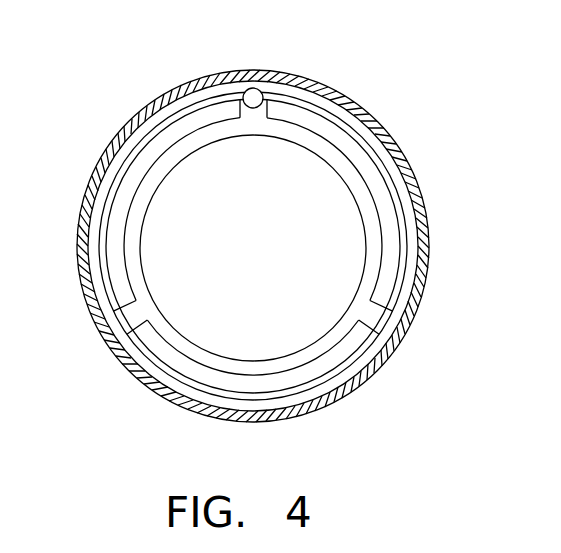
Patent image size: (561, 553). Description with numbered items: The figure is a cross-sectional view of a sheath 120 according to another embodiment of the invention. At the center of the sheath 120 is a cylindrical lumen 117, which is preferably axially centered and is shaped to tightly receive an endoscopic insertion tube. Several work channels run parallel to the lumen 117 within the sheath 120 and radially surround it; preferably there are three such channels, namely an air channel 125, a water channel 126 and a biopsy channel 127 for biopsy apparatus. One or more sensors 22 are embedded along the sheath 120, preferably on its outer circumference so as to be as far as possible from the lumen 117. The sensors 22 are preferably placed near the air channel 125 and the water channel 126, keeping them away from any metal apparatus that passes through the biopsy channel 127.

The sensor 22 is at (257, 86).
The lumen 117 is at (270, 297).
The sheath 120 is at (102, 317).
The air channel 125 is at (137, 176).
The water channel 126 is at (383, 197).
The biopsy channel 127 is at (297, 378).